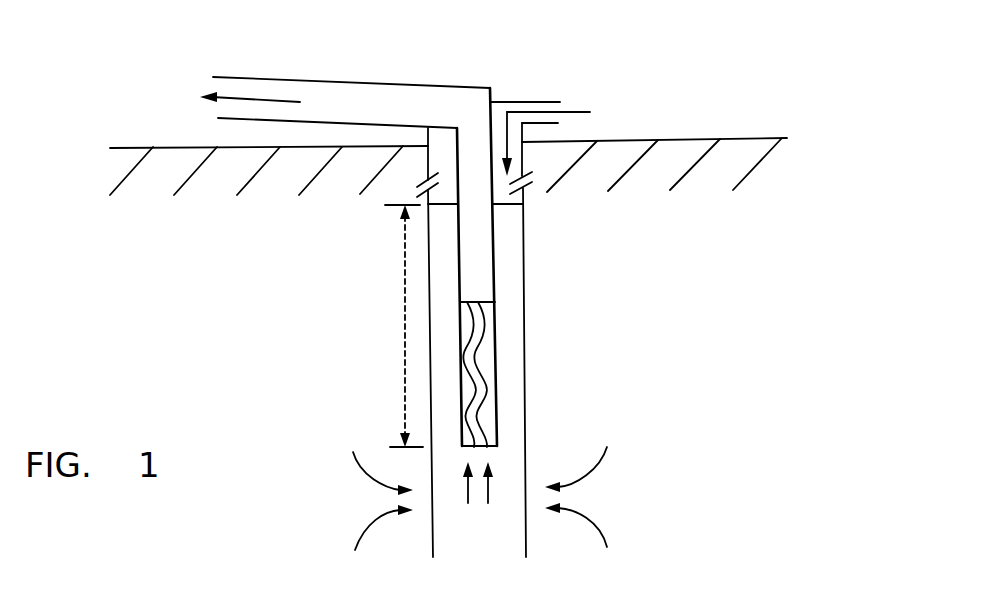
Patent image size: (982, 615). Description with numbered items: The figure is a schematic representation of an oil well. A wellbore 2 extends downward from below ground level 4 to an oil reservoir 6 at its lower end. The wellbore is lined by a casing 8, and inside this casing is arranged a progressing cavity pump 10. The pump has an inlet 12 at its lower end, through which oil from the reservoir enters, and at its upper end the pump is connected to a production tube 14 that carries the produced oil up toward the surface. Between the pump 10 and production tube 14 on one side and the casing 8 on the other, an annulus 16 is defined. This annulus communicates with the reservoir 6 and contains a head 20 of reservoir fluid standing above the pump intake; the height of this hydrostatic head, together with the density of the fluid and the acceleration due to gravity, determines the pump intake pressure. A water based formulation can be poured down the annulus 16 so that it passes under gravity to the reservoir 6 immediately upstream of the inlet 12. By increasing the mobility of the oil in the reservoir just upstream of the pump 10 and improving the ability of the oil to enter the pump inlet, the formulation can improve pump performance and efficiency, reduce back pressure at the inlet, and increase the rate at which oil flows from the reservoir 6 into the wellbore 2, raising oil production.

The wellbore 2 is at (429, 317).
The ground level 4 is at (130, 147).
The oil reservoir 6 is at (540, 473).
The casing 8 is at (522, 370).
The progressing cavity pump 10 is at (397, 276).
The inlet 12 is at (467, 457).
The production tube 14 is at (455, 250).
The annulus 16 is at (508, 218).
The head of reservoir fluid 20 is at (510, 200).